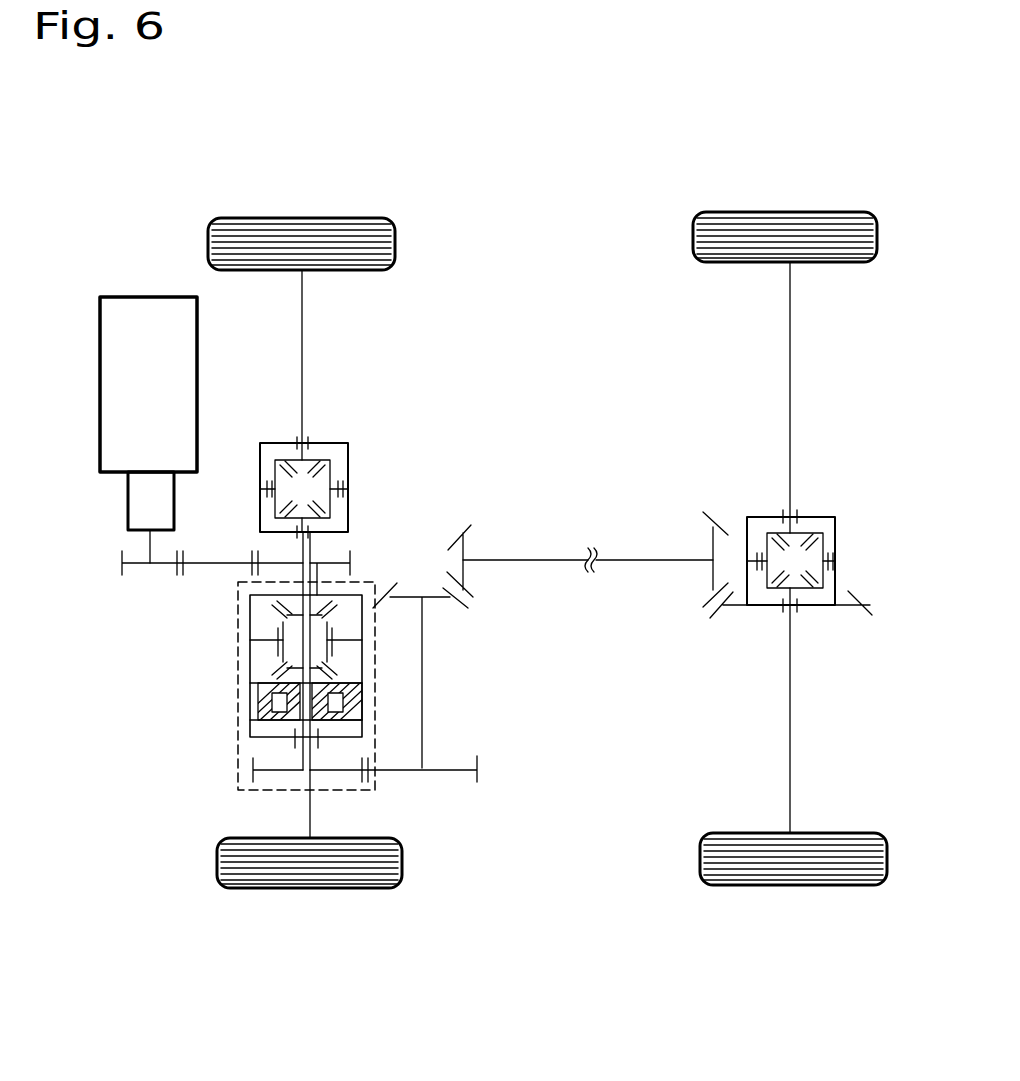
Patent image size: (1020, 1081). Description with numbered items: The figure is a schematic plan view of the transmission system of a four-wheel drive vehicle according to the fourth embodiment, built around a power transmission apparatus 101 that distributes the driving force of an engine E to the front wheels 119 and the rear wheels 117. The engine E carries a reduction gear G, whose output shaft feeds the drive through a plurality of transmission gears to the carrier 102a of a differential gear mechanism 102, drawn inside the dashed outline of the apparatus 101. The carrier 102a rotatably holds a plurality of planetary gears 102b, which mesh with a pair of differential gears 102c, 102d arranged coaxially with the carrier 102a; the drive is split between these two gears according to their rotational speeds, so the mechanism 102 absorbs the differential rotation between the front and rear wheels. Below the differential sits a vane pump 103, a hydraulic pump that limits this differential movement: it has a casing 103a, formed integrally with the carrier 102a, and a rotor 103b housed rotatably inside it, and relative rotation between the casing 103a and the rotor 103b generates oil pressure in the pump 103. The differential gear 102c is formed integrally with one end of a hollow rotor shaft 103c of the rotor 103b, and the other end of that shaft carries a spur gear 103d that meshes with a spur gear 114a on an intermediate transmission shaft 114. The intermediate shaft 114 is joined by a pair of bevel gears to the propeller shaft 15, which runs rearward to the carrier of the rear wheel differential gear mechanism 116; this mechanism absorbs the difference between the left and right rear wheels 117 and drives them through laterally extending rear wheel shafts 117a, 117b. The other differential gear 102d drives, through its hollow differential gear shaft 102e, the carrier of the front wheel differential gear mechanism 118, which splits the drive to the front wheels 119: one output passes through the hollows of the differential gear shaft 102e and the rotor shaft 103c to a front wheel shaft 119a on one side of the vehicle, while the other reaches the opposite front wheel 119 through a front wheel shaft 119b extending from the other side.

The engine E is at (102, 388).
The reduction gear G is at (128, 497).
The propeller shaft 15 is at (642, 560).
The power transmission apparatus for four-wheel drive vehicle 101 is at (238, 678).
The differential gear mechanism 102 is at (232, 627).
The carrier 102a is at (250, 600).
The planetary gears 102b is at (285, 657).
The differential gear 102c is at (363, 700).
The differential gear 102d is at (350, 583).
The hollow differential gear shaft 102e is at (293, 562).
The vane pump 103 is at (233, 726).
The casing 103a is at (255, 695).
The rotor 103b is at (295, 742).
The hollow rotor shaft 103c is at (313, 753).
The spur gear 103d is at (280, 773).
The intermediate transmission shaft 114 is at (422, 670).
The spur gear 114a is at (457, 768).
The rear wheel differential gear mechanism 116 is at (848, 503).
The rear wheels 117 is at (789, 212).
The rear wheel shaft 117a is at (790, 683).
The rear wheel shaft 117b is at (790, 360).
The front wheel differential gear mechanism 118 is at (281, 420).
The front wheels 119 is at (302, 218).
The front wheel shaft 119a is at (313, 822).
The front wheel shaft 119b is at (302, 337).